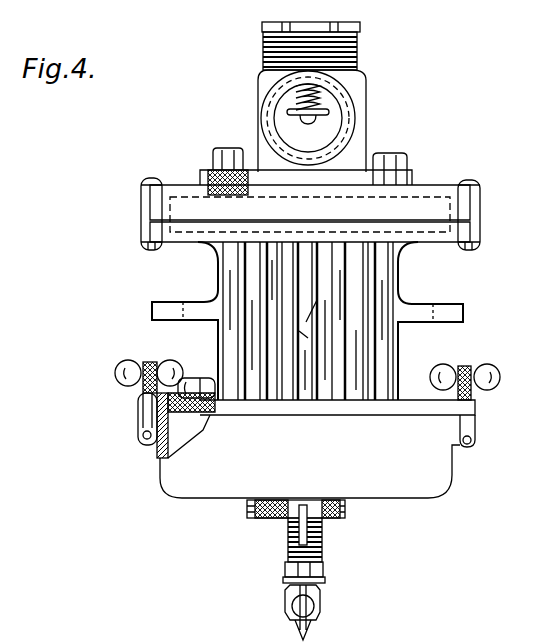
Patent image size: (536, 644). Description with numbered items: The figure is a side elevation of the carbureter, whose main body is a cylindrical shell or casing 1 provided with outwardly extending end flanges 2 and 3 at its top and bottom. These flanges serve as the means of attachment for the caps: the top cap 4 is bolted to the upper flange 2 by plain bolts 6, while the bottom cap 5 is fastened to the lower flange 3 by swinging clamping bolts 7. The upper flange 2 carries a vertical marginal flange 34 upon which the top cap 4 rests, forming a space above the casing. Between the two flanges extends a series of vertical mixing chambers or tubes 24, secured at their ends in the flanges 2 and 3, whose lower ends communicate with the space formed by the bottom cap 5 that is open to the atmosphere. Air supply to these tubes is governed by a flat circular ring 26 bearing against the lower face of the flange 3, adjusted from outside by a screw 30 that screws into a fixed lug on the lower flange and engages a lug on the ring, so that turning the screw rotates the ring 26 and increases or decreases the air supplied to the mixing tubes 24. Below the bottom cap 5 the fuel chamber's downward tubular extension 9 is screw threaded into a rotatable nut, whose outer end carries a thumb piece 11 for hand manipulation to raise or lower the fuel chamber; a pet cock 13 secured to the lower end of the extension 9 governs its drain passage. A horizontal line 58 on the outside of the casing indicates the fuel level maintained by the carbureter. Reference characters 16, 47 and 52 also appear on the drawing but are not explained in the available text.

The cylindrical shell or casing 1 is at (214, 262).
The top end flange 2 is at (482, 237).
The bottom end flange 3 is at (478, 408).
The top cap 4 is at (482, 198).
The bottom cap 5 is at (310, 471).
The plain bolts 6 is at (146, 180).
The swinging clamping bolts 7 is at (124, 378).
The downward tubular extension 9 is at (326, 550).
The thumb piece 11 is at (324, 535).
The pet cock 13 is at (300, 607).
The drain fitting 16 is at (292, 520).
The vertical mixing chambers or tubes 24 is at (355, 398).
The flat circular plate or ring 26 is at (205, 420).
The screw 30 is at (196, 378).
The vertical marginal flange 34 is at (170, 208).
The valve 47 is at (333, 117).
The tube 52 is at (295, 328).
The fuel level line 58 is at (320, 304).